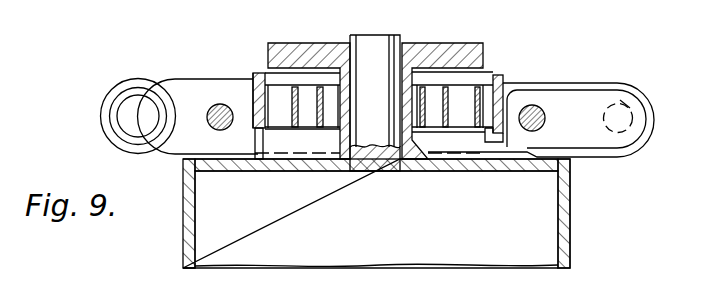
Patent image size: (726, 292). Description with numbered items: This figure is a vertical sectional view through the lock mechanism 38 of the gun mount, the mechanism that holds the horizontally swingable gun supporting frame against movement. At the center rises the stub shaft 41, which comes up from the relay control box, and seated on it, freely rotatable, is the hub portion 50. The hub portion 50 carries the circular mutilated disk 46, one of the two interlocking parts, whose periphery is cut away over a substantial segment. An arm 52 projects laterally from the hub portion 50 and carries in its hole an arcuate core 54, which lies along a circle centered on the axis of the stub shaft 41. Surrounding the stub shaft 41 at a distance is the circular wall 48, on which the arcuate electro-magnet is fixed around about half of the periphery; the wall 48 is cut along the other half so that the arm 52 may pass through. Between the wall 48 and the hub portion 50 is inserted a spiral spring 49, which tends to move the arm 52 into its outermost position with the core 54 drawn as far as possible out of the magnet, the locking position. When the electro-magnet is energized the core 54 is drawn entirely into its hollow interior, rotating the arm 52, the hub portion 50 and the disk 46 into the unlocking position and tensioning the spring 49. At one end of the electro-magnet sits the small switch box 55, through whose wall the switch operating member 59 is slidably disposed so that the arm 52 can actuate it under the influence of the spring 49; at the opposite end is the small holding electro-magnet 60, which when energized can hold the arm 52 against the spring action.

The lock mechanism 38 is at (333, 38).
The stub shaft 41 is at (383, 44).
The circular mutilated disk 46 is at (290, 43).
The circular wall 48 is at (195, 228).
The spiral spring 49 is at (478, 87).
The hub portion 50 is at (421, 70).
The arm 52 is at (571, 97).
The arcuate core 54 is at (218, 104).
The switch box 55 is at (613, 83).
The switch operating member 59 is at (627, 101).
The holding electro-magnet 60 is at (135, 103).